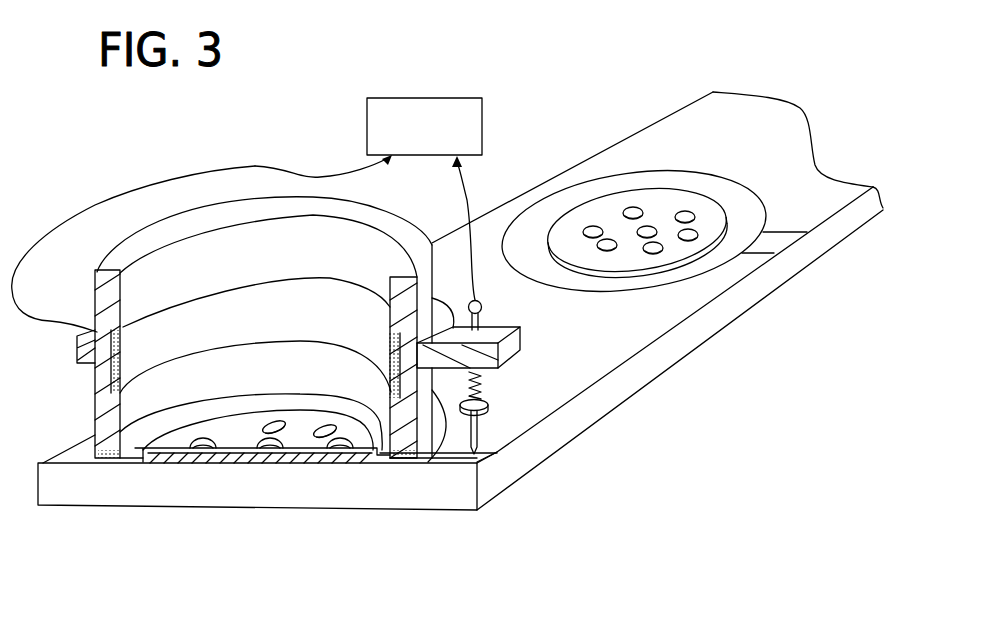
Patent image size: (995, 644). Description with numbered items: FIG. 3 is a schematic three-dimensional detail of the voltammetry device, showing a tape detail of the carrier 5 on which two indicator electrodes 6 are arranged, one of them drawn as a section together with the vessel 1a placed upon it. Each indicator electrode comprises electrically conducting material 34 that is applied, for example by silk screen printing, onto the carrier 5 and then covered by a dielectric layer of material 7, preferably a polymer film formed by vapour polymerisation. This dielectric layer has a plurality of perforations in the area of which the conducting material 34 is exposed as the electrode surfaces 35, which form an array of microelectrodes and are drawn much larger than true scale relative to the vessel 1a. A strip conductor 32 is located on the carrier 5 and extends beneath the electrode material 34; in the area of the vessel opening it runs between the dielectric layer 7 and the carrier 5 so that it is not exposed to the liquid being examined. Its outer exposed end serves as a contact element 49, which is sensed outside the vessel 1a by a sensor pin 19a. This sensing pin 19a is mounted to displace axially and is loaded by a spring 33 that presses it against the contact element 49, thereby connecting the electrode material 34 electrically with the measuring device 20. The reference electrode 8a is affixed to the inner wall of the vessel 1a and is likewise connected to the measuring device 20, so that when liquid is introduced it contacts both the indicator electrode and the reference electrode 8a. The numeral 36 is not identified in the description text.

The vessel 1a is at (97, 303).
The carrier 5 is at (713, 318).
The indicator electrodes 6 is at (594, 140).
The dielectric layer of material 7 is at (232, 449).
The reference electrode 8a is at (112, 386).
The sensor pin 19a is at (485, 428).
The measuring device 20 is at (368, 199).
The strip conductor 32 is at (328, 458).
The spring 33 is at (482, 382).
The electrically conducting material 34 is at (265, 458).
The electrode surfaces 35 is at (200, 442).
The gap 36 is at (93, 461).
The contact element 49 is at (777, 238).